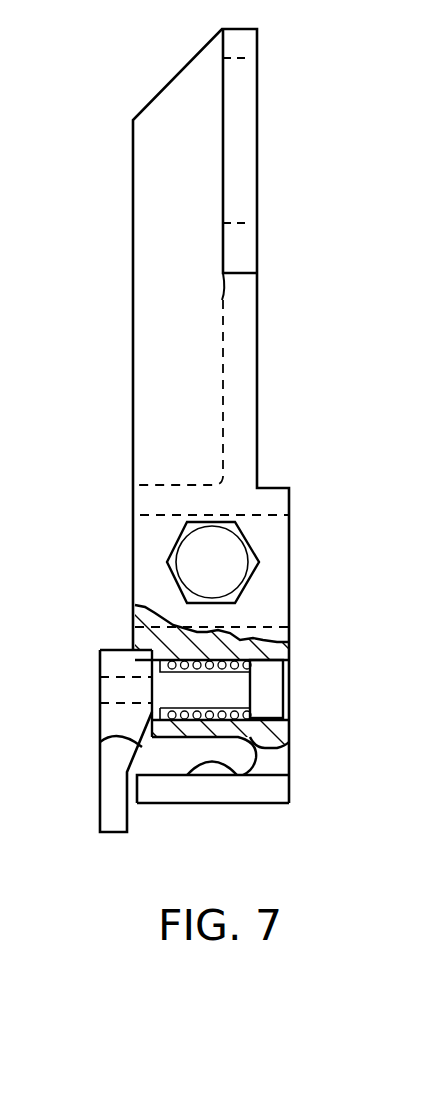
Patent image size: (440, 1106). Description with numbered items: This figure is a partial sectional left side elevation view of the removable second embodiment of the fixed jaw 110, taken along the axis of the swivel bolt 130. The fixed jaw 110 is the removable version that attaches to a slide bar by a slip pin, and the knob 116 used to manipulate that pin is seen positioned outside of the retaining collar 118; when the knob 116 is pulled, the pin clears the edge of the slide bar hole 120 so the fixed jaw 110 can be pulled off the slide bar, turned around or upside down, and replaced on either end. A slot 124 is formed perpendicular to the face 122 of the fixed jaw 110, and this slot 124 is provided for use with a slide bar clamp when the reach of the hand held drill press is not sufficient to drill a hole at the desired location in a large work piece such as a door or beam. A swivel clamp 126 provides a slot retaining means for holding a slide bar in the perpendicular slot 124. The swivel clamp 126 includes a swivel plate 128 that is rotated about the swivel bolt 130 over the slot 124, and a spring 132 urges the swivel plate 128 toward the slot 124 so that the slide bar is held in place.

The fixed jaw 110 is at (152, 322).
The knob 116 is at (222, 548).
The retaining collar 118 is at (257, 575).
The slide bar hole 120 is at (263, 625).
The face 122 is at (257, 82).
The slot 124 is at (290, 777).
The swivel clamp 126 is at (100, 797).
The swivel plate 128 is at (100, 740).
The swivel bolt 130 is at (238, 690).
The spring 132 is at (275, 743).